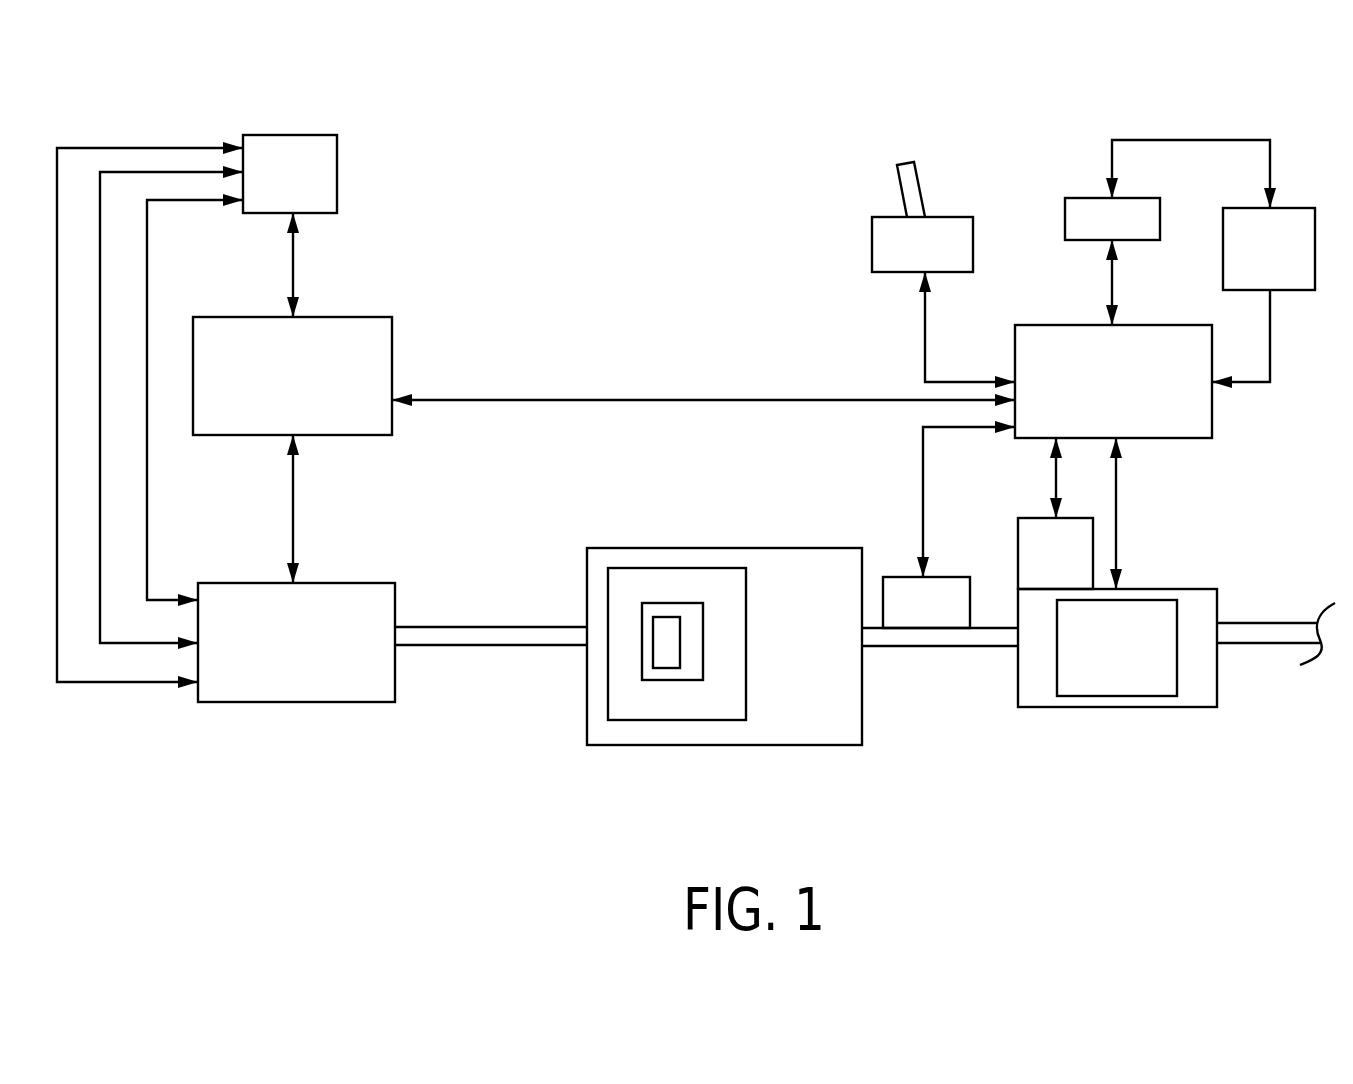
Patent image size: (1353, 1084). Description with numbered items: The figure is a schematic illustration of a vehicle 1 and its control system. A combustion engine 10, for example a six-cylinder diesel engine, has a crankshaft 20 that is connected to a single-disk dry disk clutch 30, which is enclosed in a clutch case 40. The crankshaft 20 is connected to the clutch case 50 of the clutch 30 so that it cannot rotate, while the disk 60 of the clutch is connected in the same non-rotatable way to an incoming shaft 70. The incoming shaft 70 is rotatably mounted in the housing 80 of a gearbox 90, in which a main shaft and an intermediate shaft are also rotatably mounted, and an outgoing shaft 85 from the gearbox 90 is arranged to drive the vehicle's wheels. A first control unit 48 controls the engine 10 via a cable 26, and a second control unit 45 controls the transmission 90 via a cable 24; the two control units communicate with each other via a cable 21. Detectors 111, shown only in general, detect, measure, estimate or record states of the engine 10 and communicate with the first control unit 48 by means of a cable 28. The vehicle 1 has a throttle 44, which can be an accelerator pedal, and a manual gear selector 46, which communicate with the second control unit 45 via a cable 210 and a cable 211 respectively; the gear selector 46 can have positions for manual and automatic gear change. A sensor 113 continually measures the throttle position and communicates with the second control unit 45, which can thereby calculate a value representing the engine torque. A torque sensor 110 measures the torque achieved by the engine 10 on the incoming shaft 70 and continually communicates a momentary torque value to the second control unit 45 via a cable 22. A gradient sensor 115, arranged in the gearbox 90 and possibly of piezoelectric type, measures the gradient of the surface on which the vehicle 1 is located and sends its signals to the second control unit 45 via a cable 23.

The vehicle 1 is at (585, 152).
The combustion engine 10 is at (280, 659).
The crankshaft 20 is at (472, 645).
The cable 21 is at (490, 400).
The cable 22 is at (923, 482).
The cable 23 is at (1056, 484).
The cable 24 is at (1116, 523).
The cable 26 is at (293, 527).
The cable 28 is at (293, 265).
The clutch 30 is at (695, 568).
The clutch case 40 is at (780, 745).
The throttle 44 is at (1095, 234).
The second control unit 45 is at (1096, 398).
The manual gear selector 46 is at (905, 256).
The first control unit 48 is at (275, 392).
The clutch case 50 is at (665, 603).
The disk 60 is at (667, 668).
The incoming shaft 70 is at (925, 646).
The housing 80 is at (1100, 663).
The outgoing shaft 85 is at (1267, 643).
The gearbox 90 is at (1118, 707).
The torque sensor 110 is at (904, 619).
The detectors 111 is at (268, 190).
The sensor 113 is at (1247, 263).
The gradient sensor 115 is at (1033, 568).
The cable 210 is at (1112, 285).
The cable 211 is at (925, 355).